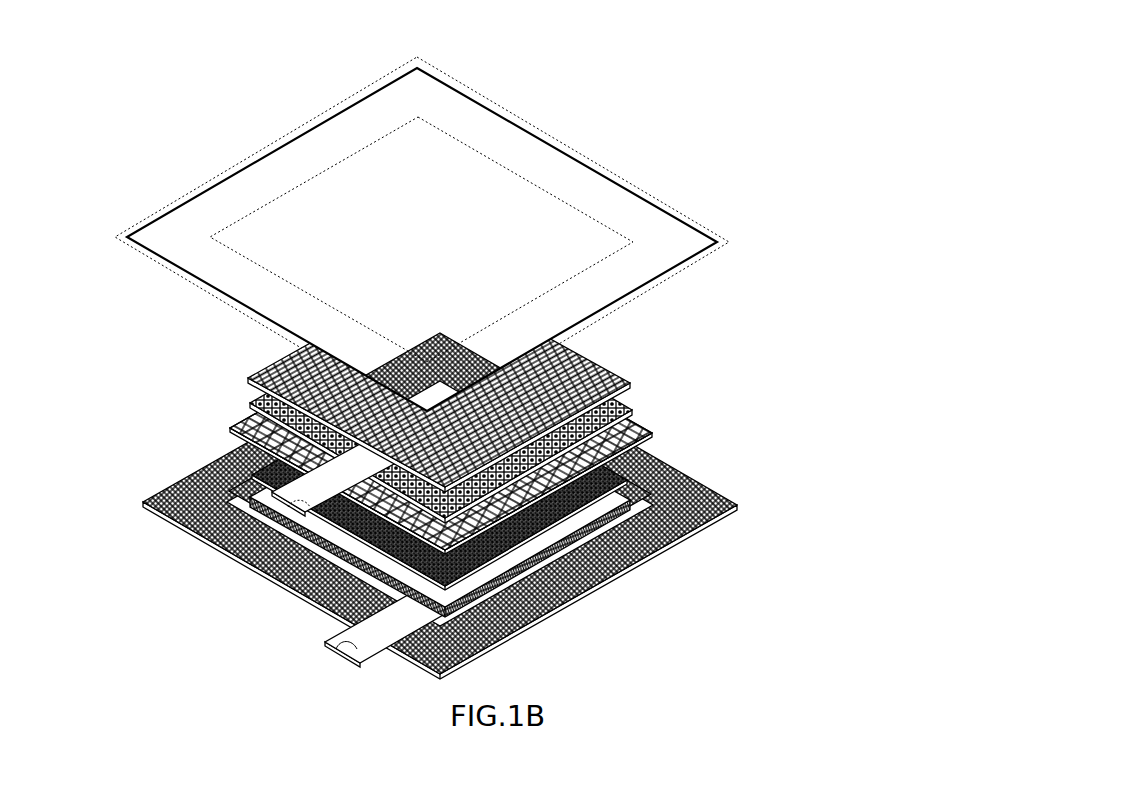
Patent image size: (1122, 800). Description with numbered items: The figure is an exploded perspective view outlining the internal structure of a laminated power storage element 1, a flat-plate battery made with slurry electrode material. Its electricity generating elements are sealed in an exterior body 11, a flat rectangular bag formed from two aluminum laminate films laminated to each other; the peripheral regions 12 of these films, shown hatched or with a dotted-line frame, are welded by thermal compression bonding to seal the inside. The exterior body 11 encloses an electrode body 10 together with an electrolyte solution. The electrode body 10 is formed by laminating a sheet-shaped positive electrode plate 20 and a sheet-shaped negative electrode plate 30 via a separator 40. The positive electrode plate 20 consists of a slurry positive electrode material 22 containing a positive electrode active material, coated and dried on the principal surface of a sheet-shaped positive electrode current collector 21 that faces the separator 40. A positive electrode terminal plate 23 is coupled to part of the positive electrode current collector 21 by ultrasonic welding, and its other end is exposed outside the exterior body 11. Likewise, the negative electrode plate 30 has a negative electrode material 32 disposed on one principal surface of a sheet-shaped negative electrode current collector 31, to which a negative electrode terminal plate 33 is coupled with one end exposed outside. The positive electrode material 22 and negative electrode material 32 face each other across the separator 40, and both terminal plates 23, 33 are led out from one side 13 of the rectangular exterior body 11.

The laminated power storage element 1 is at (620, 88).
The electrode body 10 is at (536, 487).
The exterior body 11 is at (667, 248).
The peripheral regions 12 is at (602, 194).
The one side 13 is at (250, 317).
The positive electrode plate 20 is at (514, 535).
The positive electrode current collector 21 is at (677, 474).
The positive electrode material 22 is at (652, 452).
The positive electrode terminal plate 23 is at (335, 645).
The negative electrode plate 30 is at (555, 398).
The negative electrode current collector 31 is at (600, 366).
The negative electrode material 32 is at (630, 392).
The negative electrode terminal plate 33 is at (270, 507).
The separator 40 is at (652, 432).